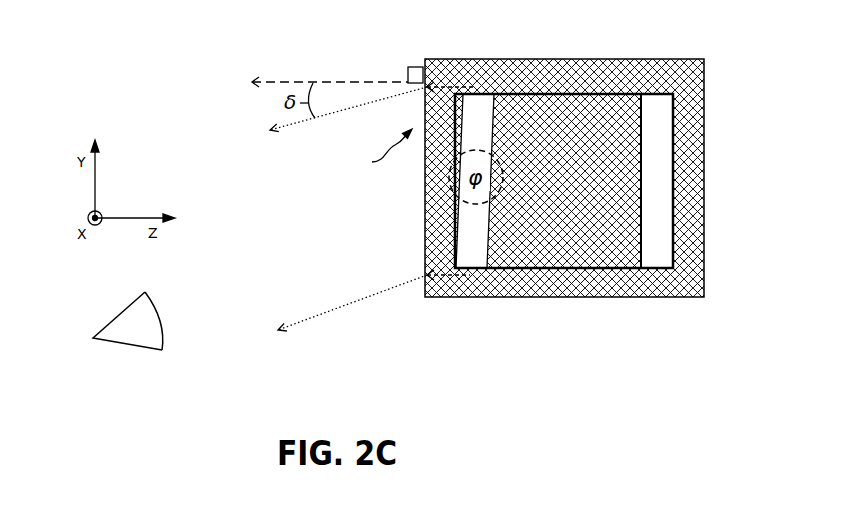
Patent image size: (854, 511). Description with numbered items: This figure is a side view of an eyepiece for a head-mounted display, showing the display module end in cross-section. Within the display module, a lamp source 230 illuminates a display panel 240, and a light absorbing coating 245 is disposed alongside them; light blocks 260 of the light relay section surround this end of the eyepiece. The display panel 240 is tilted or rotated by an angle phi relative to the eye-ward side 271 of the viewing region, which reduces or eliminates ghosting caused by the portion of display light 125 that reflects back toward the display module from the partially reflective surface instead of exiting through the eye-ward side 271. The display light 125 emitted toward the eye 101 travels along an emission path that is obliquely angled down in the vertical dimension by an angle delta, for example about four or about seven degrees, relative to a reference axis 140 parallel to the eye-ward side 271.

The eye 101 is at (128, 321).
The display light 125 is at (370, 102).
The reference axis 140 is at (268, 82).
The lamp source 230 is at (675, 135).
The display panel 240 is at (478, 248).
The light absorbing coating 245 is at (564, 181).
The light blocks 260 is at (593, 59).
The eye-ward side 271 is at (376, 150).